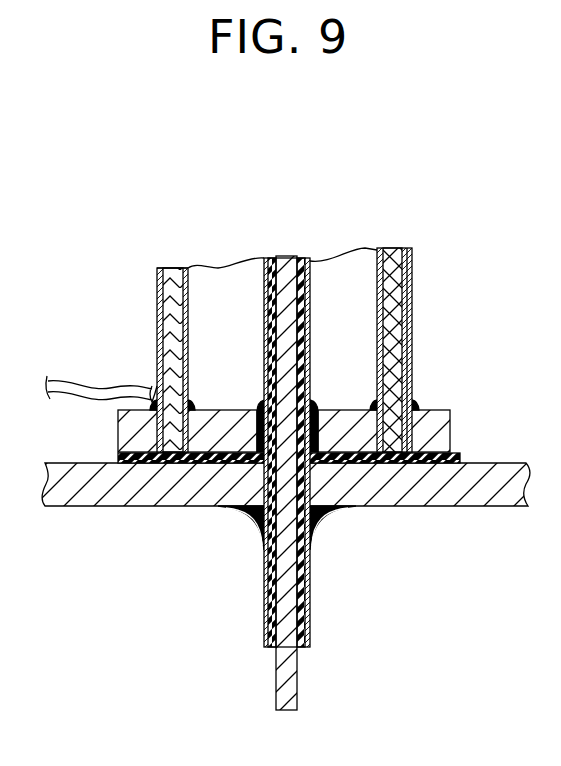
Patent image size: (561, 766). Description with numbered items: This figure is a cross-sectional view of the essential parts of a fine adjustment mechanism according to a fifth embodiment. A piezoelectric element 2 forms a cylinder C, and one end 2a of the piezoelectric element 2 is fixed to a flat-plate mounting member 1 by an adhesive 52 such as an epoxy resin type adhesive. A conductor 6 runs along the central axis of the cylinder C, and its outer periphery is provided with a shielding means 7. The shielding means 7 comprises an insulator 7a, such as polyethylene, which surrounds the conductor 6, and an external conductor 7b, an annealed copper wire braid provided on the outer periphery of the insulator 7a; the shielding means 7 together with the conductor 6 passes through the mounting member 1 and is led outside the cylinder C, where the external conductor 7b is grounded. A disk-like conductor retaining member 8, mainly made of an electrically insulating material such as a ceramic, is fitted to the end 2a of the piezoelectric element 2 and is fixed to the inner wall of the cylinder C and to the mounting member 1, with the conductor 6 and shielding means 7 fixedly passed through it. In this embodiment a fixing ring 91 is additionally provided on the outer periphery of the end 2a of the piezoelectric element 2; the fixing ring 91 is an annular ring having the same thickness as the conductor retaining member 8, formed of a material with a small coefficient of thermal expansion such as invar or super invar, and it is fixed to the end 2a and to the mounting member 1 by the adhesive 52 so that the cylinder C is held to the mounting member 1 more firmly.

The mounting member 1 is at (502, 462).
The piezoelectric element 2 is at (175, 320).
The end of piezoelectric element 2a is at (167, 458).
The conductor 6 is at (363, 455).
The shielding means 7 is at (318, 280).
The insulator 7a is at (308, 308).
The external conductor 7b is at (308, 329).
The conductor retaining member 8 is at (346, 408).
The fixing ring 91 is at (448, 410).
The adhesive 52 is at (387, 458).
The cylinder C is at (171, 260).